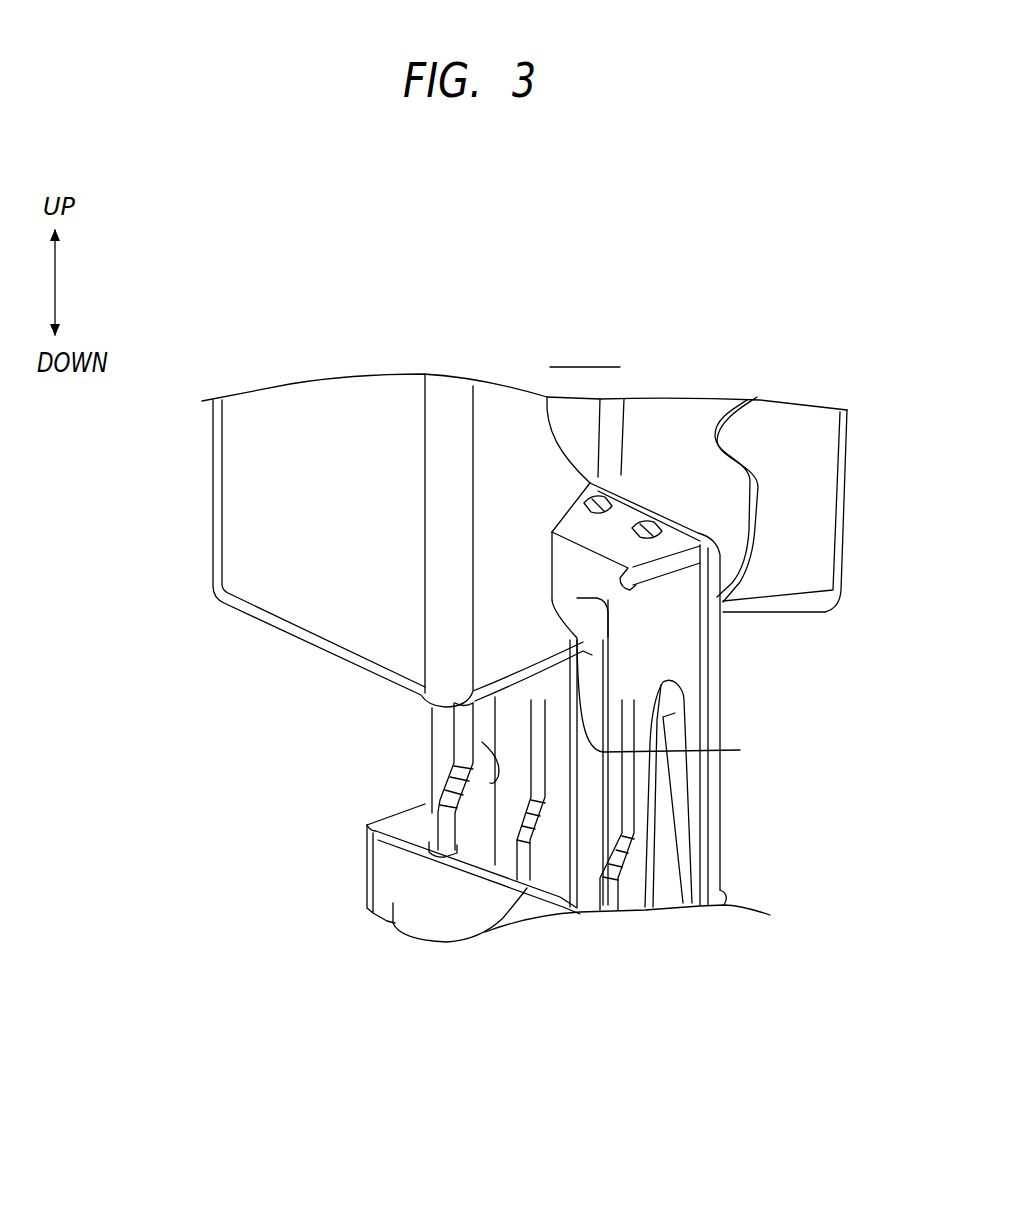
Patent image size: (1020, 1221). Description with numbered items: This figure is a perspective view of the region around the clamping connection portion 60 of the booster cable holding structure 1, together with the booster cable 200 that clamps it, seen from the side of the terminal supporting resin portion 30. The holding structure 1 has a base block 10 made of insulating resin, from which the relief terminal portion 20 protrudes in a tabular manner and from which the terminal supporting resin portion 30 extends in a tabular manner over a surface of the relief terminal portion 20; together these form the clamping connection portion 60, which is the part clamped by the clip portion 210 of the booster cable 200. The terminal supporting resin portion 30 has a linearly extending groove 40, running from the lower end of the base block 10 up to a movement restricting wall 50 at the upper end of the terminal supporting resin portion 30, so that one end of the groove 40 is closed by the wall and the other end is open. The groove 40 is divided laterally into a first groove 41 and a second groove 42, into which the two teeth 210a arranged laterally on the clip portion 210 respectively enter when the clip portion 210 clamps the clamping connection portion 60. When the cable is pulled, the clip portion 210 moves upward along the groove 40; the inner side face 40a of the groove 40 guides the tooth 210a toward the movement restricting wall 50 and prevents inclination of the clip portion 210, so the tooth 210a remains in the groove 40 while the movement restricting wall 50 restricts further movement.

The booster cable holding structure 1 is at (584, 440).
The base block 10 is at (395, 872).
The relief terminal portion 20 is at (720, 710).
The terminal supporting resin portion 30 is at (457, 742).
The groove 40 is at (412, 848).
The inner side face 40a is at (500, 777).
The first groove 41 is at (492, 842).
The second groove 42 is at (580, 870).
The movement restricting wall 50 is at (608, 600).
The clamping connection portion 60 is at (618, 547).
The booster cable 200 is at (308, 432).
The clip portion 210 is at (270, 508).
The tooth 210a is at (740, 750).